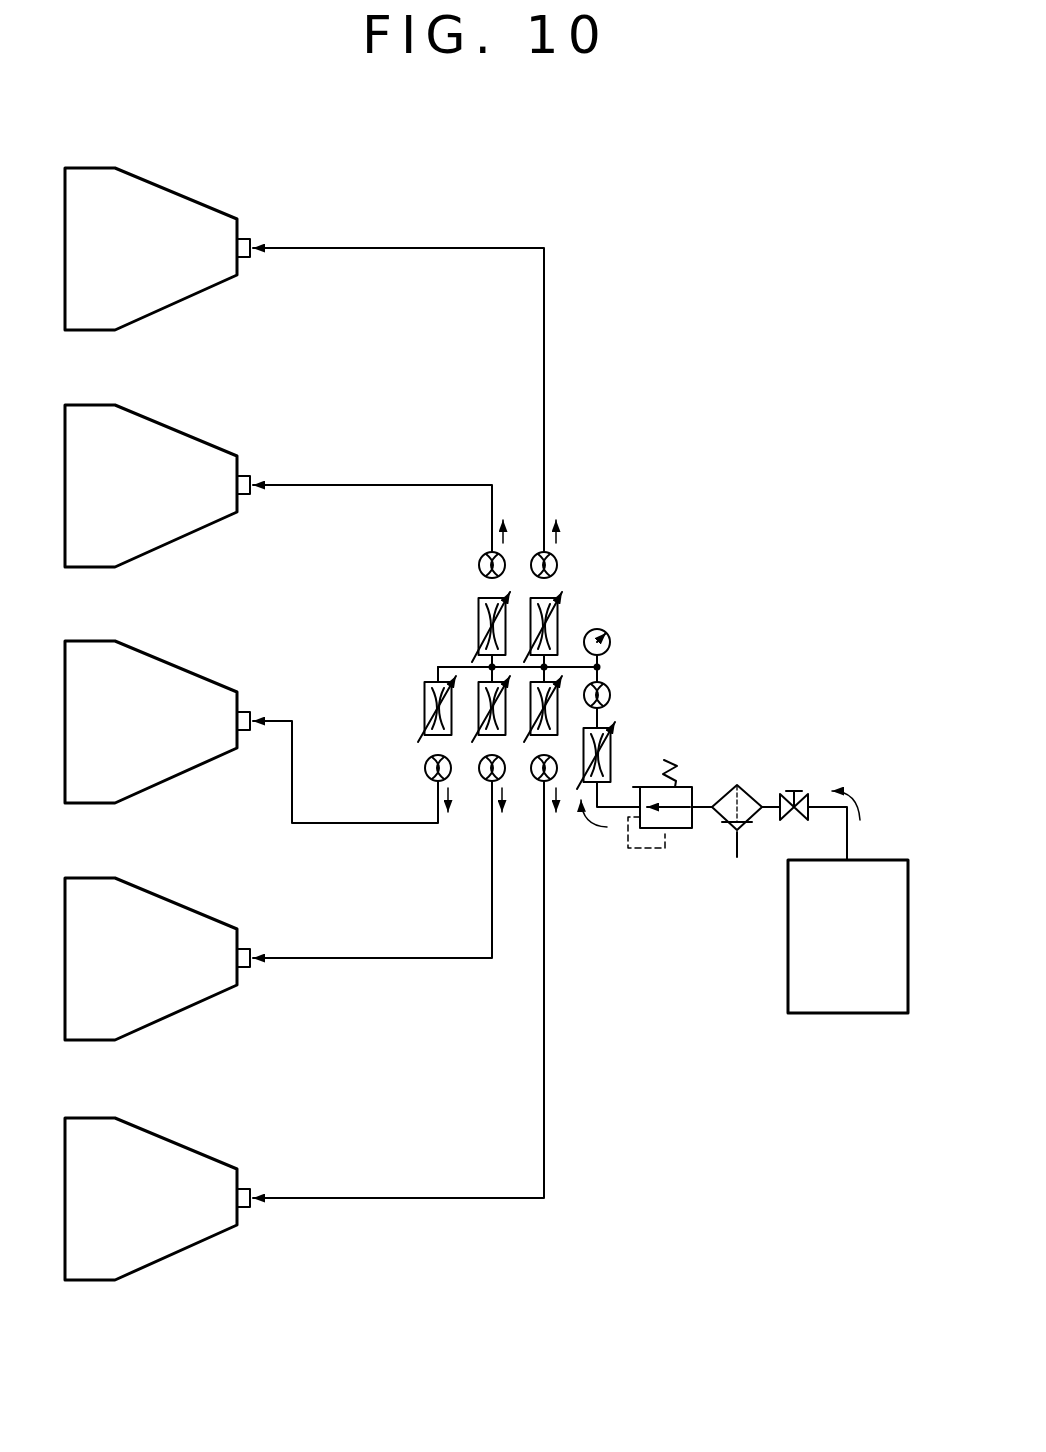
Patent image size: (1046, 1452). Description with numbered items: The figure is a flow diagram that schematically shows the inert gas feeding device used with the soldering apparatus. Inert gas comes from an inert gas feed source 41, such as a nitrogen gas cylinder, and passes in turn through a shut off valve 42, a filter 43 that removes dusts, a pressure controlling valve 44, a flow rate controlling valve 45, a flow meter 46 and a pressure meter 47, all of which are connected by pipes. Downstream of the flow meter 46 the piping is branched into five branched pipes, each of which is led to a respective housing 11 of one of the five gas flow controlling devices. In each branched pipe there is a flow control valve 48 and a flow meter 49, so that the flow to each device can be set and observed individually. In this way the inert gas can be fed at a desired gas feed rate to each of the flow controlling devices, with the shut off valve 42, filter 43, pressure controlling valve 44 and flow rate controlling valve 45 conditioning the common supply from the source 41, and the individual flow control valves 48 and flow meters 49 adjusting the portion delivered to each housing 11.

The housing 11 is at (84, 168).
The inert gas feed source 41 is at (788, 940).
The shut off valve 42 is at (803, 795).
The filter 43 is at (750, 790).
The pressure controlling valve 44 is at (683, 830).
The flow rate controlling valve 45 is at (612, 752).
The flow meter 46 is at (610, 695).
The pressure meter 47 is at (630, 624).
The flow control valve 48 is at (478, 615).
The flow meter 49 is at (481, 560).